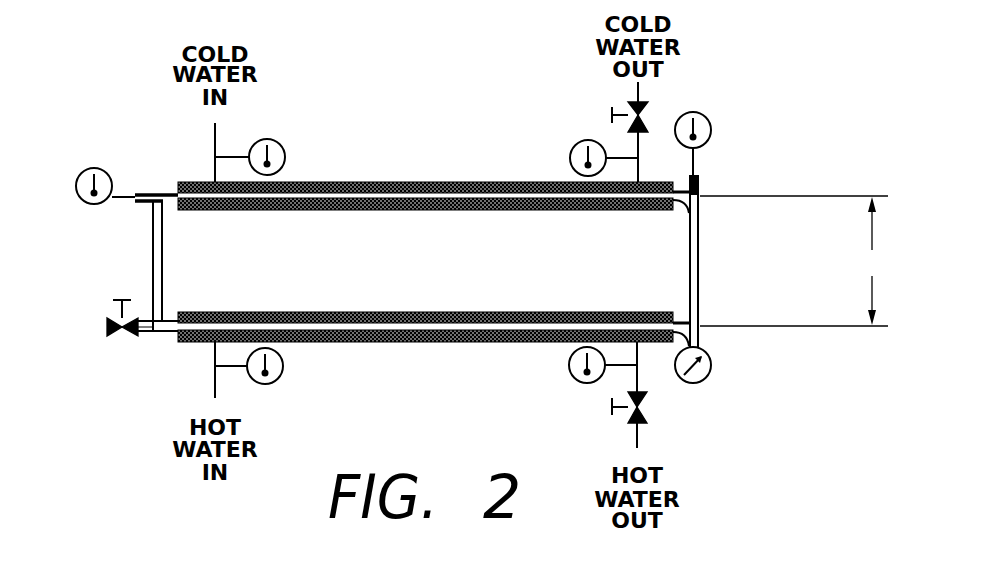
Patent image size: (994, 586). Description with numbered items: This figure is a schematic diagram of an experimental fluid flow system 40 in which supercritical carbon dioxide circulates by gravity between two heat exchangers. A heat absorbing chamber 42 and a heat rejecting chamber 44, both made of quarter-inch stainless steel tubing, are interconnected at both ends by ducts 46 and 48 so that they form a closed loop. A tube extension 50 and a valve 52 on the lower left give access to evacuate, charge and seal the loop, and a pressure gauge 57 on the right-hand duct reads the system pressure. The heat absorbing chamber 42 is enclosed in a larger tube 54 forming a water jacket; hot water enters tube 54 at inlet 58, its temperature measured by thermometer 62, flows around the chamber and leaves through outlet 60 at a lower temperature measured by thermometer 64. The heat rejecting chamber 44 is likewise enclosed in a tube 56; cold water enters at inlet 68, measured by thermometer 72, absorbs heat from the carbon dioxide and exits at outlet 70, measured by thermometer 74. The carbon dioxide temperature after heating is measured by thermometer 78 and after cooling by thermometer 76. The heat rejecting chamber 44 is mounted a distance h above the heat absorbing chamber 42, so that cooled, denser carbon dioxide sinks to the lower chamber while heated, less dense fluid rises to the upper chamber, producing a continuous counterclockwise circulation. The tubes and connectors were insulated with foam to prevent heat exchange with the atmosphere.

The fluid flow system 40 is at (745, 224).
The heat absorbing chamber 42 is at (167, 318).
The heat rejecting chamber 44 is at (682, 205).
The duct 46 is at (699, 280).
The duct 48 is at (152, 262).
The tube extension 50 is at (145, 331).
The valve 52 is at (107, 325).
The tube 54 is at (365, 312).
The tube 56 is at (347, 210).
The pressure gauge 57 is at (712, 360).
The inlet 58 is at (213, 385).
The outlet 60 is at (637, 385).
The thermometer 62 is at (283, 372).
The thermometer 64 is at (573, 378).
The inlet 68 is at (213, 129).
The outlet 70 is at (640, 145).
The thermometer 72 is at (295, 136).
The thermometer 74 is at (578, 142).
The thermometer 76 is at (80, 172).
The thermometer 78 is at (712, 126).